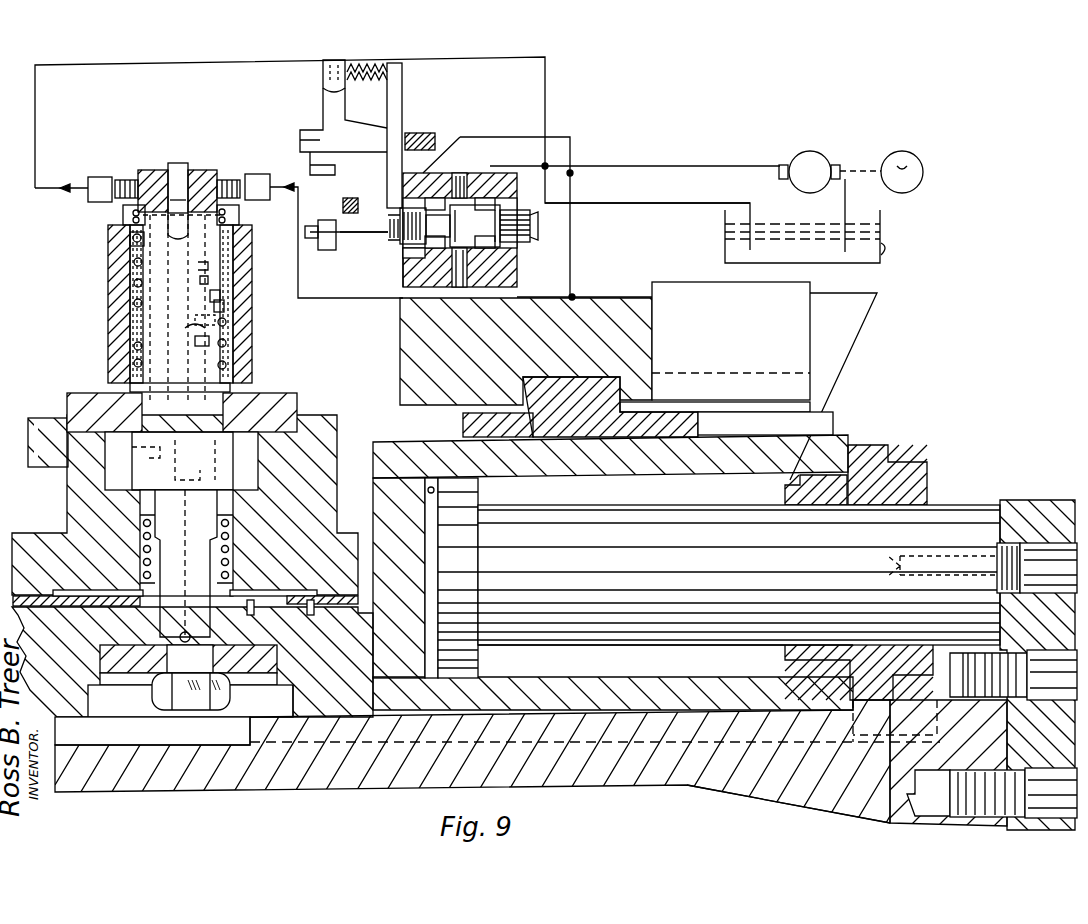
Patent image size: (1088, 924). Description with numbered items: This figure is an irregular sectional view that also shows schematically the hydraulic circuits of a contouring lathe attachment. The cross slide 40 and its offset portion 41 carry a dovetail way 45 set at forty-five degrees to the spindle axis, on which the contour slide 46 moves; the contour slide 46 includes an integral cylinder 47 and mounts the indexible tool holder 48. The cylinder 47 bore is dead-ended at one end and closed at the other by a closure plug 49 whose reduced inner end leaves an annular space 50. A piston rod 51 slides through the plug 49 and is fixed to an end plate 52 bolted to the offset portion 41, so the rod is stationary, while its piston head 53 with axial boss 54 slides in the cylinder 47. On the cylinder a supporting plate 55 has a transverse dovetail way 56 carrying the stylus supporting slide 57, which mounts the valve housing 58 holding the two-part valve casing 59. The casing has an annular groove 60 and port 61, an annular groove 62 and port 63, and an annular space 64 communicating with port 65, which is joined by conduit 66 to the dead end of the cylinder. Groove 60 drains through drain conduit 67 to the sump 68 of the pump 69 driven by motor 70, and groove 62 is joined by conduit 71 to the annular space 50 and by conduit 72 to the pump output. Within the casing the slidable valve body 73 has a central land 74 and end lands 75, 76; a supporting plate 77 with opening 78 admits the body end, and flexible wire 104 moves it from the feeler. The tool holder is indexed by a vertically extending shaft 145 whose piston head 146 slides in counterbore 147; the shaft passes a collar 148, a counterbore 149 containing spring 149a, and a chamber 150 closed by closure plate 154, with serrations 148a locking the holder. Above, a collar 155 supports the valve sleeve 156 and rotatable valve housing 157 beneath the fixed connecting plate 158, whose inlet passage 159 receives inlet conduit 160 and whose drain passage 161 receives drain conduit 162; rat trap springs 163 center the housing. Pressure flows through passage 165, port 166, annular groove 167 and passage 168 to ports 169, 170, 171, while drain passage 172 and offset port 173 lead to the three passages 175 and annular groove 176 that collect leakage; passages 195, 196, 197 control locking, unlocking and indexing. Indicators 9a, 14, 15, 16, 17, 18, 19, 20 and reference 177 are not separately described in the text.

The section line 9a is at (68, 235).
The section line 14 is at (338, 437).
The section line 15 is at (92, 252).
The section line 16 is at (92, 274).
The section line 17 is at (92, 354).
The section line 18 is at (92, 294).
The section line 19 is at (92, 314).
The section line 20 is at (92, 334).
The cross slide 40 is at (98, 790).
The offset portion 41 is at (752, 792).
The dovetail way 45 is at (262, 726).
The contour slide 46 is at (355, 690).
The cylinder 47 is at (638, 478).
The indexible tool holder 48 is at (72, 509).
The closure plug 49 is at (895, 458).
The annular space 50 is at (841, 432).
The piston rod 51 is at (735, 486).
The end plate 52 is at (1040, 462).
The piston head 53 is at (491, 671).
The axial boss 54 is at (438, 570).
The supporting plate 55 is at (670, 412).
The dovetail way 56 is at (632, 358).
The valve housing and stylus supporting slide 57 is at (651, 320).
The valve housing 58 is at (516, 270).
The valve casing 59 is at (526, 250).
The annular groove 60 is at (495, 255).
The port 61 is at (500, 189).
The annular groove 62 is at (420, 275).
The port 63 is at (425, 226).
The annular space 64 is at (458, 262).
The port 65 is at (468, 162).
The conduit 66 is at (440, 424).
The drain conduit 67 is at (627, 214).
The sump 68 is at (884, 226).
The pump 69 is at (817, 156).
The motor 70 is at (921, 168).
The conduit 71 is at (510, 148).
The conduit 72 is at (674, 168).
The slidable valve body 73 is at (508, 211).
The central cylindrical land 74 is at (475, 226).
The end cylindrical land 75 is at (403, 276).
The end cylindrical land 76 is at (516, 227).
The supporting plate 77 is at (401, 112).
The opening 78 is at (386, 249).
The flexible wire 104 is at (347, 226).
The vertically extending shaft 145 is at (208, 635).
The piston head 146 is at (138, 685).
The cylindrical counterbore 147 is at (276, 674).
The collar 148 is at (231, 588).
The serrations 148a is at (339, 590).
The counterbore 149 is at (235, 527).
The spring 149a is at (231, 548).
The chamber 150 is at (258, 462).
The closure plate 154 is at (269, 394).
The collar 155 is at (130, 390).
The valve sleeve 156 is at (205, 266).
The valve housing 157 is at (244, 232).
The connecting plate 158 is at (210, 172).
The inlet passage 159 is at (198, 164).
The inlet conduit 160 is at (270, 176).
The outlet or drain passage 161 is at (152, 160).
The outlet or drain conduit 162 is at (106, 178).
The rat trap springs 163 is at (123, 218).
The passage 165 is at (198, 240).
The port 166 is at (218, 290).
The annular groove 167 is at (206, 280).
The vertically extending passage 168 is at (220, 302).
The port 169 is at (202, 318).
The port 170 is at (200, 328).
The port 171 is at (216, 336).
The outlet or drain passage 172 is at (130, 238).
The laterally offset port 173 is at (133, 283).
The vertically extending passages 175 is at (133, 303).
The annular groove 176 is at (228, 343).
The port 177 is at (133, 262).
The passage 195 is at (133, 346).
The passage 196 is at (133, 363).
The passage 197 is at (228, 365).